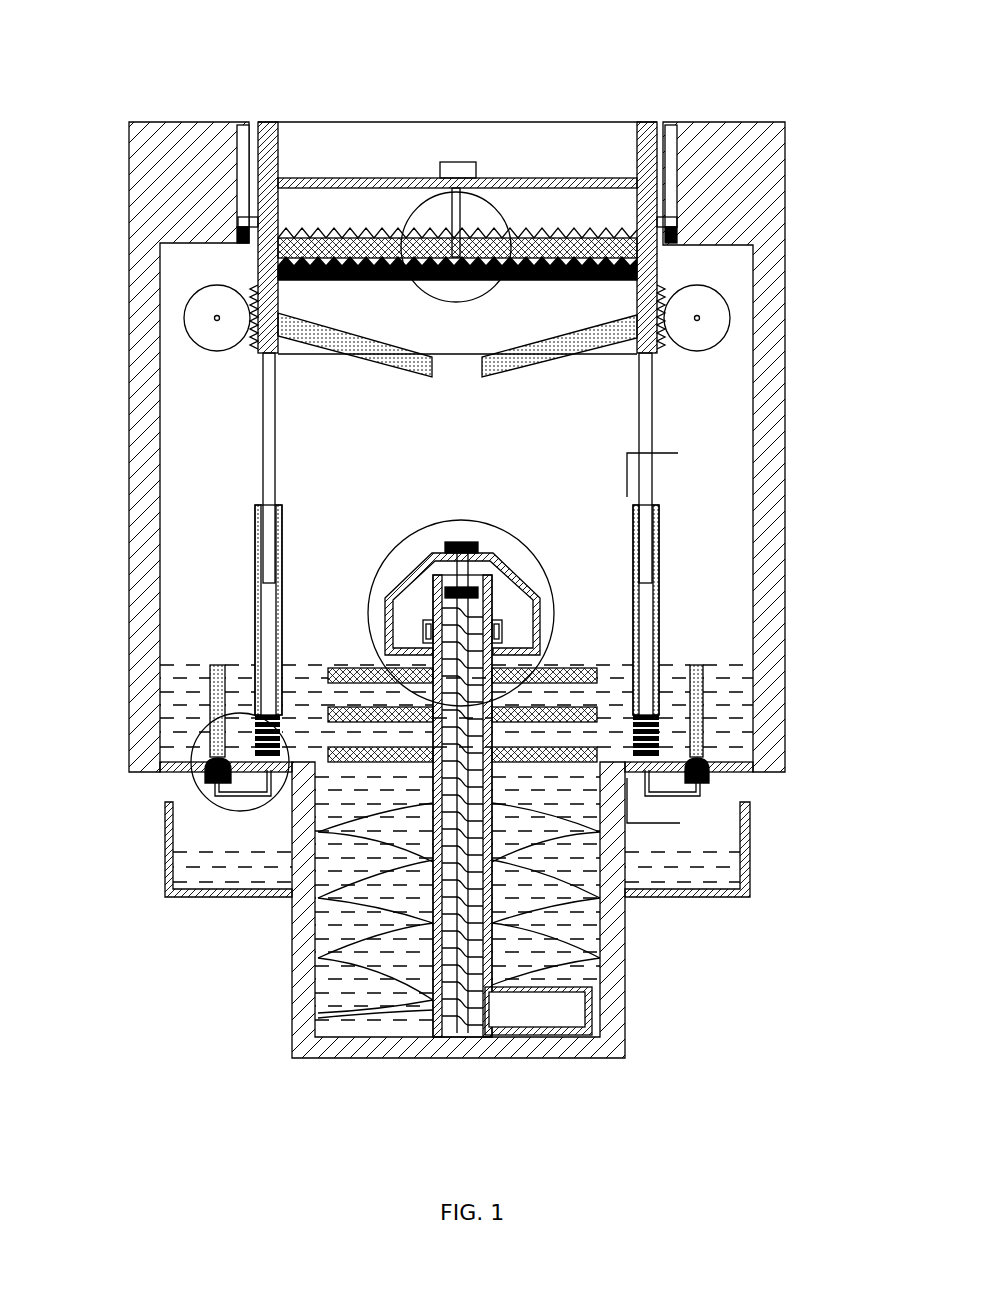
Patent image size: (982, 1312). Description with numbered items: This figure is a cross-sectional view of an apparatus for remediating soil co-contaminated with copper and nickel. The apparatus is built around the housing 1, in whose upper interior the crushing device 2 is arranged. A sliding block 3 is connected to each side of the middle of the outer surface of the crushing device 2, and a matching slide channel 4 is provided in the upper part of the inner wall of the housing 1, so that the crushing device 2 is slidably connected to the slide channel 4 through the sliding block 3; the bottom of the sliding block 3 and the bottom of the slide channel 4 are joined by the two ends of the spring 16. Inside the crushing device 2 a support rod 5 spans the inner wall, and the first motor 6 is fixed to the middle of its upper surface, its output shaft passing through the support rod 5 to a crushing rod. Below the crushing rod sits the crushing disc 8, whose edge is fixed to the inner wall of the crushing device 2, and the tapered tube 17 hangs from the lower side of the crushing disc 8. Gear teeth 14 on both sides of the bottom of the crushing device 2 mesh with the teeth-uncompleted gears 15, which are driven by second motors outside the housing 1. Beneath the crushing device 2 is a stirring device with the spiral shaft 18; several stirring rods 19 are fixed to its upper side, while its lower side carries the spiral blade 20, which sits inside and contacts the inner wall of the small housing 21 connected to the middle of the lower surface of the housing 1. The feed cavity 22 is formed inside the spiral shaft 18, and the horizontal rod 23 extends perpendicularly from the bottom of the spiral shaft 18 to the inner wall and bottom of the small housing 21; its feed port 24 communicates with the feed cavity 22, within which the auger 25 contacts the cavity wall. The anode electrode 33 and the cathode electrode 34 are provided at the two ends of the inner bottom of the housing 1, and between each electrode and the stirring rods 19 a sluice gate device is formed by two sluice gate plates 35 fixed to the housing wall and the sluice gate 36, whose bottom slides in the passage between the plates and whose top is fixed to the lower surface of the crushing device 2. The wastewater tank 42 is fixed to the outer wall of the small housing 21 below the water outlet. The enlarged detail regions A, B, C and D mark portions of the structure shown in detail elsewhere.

The housing 1 is at (167, 152).
The crushing device 2 is at (271, 127).
The sliding block 3 is at (238, 225).
The slide channel 4 is at (243, 147).
The support rod 5 is at (345, 177).
The first motor 6 is at (453, 167).
The crushing disc 8 is at (637, 272).
The gear teeth 14 is at (257, 353).
The teeth-uncompleted gear 15 is at (202, 303).
The spring 16 is at (240, 238).
The tapered tube 17 is at (307, 347).
The spiral shaft 18 is at (330, 1018).
The stirring rod 19 is at (598, 668).
The spiral blade 20 is at (370, 953).
The small housing 21 is at (613, 958).
The feed cavity 22 is at (585, 930).
The horizontal rod 23 is at (547, 1032).
The feed port 24 is at (510, 1012).
The auger 25 is at (460, 1013).
The anode electrode 33 is at (220, 692).
The cathode electrode 34 is at (707, 722).
The sluice gate plate 35 is at (255, 627).
The sluice gate 36 is at (270, 450).
The wastewater tank 42 is at (740, 865).
The detail A is at (492, 210).
The detail B is at (550, 572).
The section C is at (673, 636).
The detail D is at (190, 778).